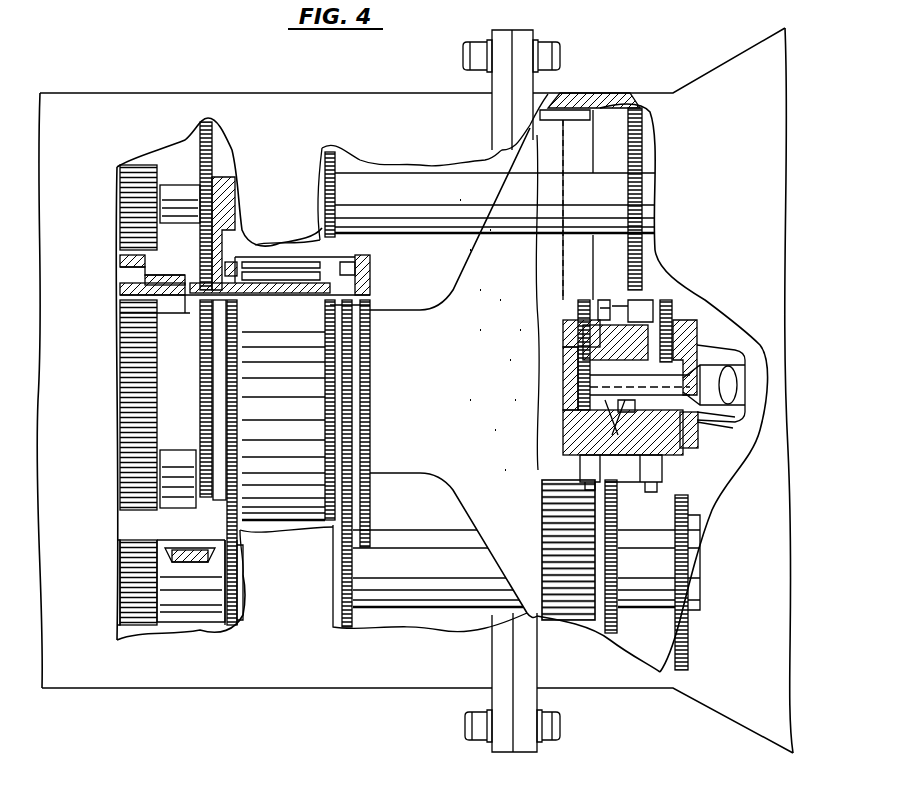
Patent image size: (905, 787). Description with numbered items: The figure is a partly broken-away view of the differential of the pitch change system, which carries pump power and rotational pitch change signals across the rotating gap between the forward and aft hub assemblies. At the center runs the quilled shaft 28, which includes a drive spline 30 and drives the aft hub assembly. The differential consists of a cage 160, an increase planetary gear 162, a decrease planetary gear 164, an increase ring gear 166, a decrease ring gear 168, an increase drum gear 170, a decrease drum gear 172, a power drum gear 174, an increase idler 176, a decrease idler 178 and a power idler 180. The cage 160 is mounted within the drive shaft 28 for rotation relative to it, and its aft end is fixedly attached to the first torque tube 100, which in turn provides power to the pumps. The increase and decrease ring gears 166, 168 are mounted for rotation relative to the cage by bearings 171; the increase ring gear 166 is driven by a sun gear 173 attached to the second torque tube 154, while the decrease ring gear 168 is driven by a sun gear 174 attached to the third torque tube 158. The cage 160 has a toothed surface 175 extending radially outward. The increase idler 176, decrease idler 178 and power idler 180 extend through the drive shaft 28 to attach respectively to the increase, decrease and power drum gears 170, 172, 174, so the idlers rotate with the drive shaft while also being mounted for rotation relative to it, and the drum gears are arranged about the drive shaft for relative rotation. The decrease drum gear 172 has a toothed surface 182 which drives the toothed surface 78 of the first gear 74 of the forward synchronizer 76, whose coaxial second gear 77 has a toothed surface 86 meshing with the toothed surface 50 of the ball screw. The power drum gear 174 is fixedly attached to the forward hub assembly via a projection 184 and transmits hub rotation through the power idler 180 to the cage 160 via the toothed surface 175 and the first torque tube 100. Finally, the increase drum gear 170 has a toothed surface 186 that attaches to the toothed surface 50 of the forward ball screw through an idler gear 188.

The quilled shaft 28 is at (494, 391).
The drive spline 30 is at (590, 115).
The toothed surface 50 is at (132, 414).
The first gear 74 is at (224, 622).
The synchronizer 76 is at (190, 545).
The second gear 77 is at (163, 626).
The toothed surface 78 is at (234, 632).
The toothed surface 86 is at (135, 620).
The first torque tube 100 is at (718, 345).
The second torque tube 154 is at (728, 381).
The third torque tube 158 is at (705, 420).
The cage 160 is at (692, 337).
The increase planetary gear 162 is at (580, 318).
The decrease planetary gear 164 is at (652, 350).
The increase ring gear 166 is at (585, 467).
The decrease ring gear 168 is at (653, 482).
The increase drum gear 170 is at (262, 298).
The bearings 171 is at (603, 417).
The decrease drum gear 172 is at (275, 389).
The sun gear 173 is at (578, 388).
The power drum gear 174 is at (278, 272).
The toothed surface 175 is at (675, 300).
The increase idler 176 is at (402, 546).
The decrease idler 178 is at (495, 203).
The power idler 180 is at (410, 598).
The toothed surface 182 is at (226, 352).
The projection 184 is at (226, 180).
The toothed surface 186 is at (195, 340).
The idler gear 188 is at (177, 190).